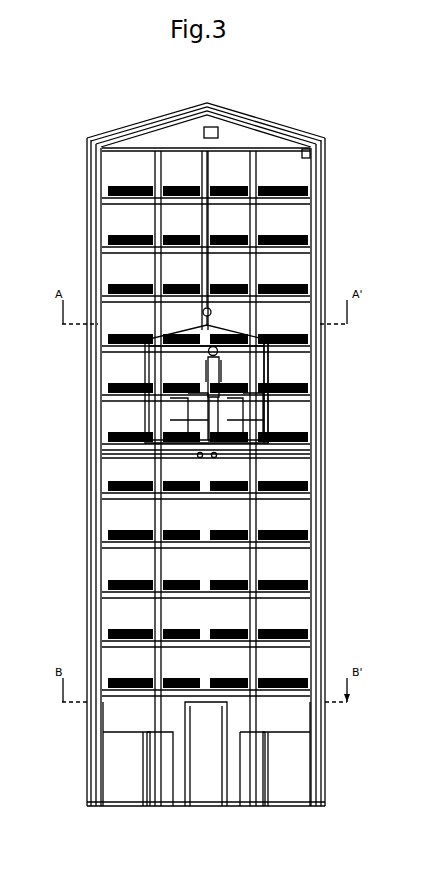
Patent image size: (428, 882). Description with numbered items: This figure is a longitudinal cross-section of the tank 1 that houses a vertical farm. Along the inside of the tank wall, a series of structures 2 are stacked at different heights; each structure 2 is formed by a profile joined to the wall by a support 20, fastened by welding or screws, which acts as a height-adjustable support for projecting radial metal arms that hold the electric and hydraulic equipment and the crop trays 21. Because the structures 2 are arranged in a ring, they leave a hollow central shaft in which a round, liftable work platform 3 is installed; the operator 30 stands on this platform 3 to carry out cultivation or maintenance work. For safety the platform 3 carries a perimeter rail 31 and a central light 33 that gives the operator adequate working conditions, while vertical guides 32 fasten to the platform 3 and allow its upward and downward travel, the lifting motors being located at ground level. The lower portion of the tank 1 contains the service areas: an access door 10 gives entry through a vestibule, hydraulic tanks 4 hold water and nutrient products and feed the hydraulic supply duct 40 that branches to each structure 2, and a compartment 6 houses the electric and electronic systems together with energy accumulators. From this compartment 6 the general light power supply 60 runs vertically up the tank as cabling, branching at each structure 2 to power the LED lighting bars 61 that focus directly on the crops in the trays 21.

The tank 1 is at (147, 115).
The structure 2 is at (277, 207).
The work platform 3 is at (188, 443).
The hydraulic tank 4 is at (118, 777).
The compartment 6 is at (168, 773).
The access door 10 is at (213, 767).
The support 20 is at (212, 435).
The crop tray 21 is at (125, 188).
The operator 30 is at (203, 383).
The perimeter rail 31 is at (268, 415).
The vertical guide 32 is at (160, 160).
The central light 33 is at (208, 322).
The hydraulic supply duct 40 is at (92, 482).
The general light power supply 60 is at (322, 437).
The LED lighting bar 61 is at (290, 455).